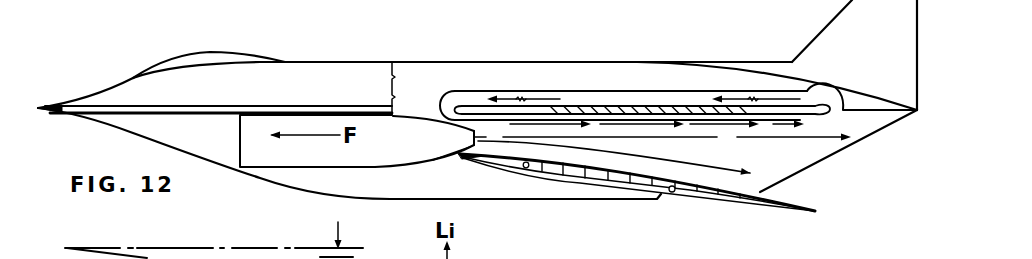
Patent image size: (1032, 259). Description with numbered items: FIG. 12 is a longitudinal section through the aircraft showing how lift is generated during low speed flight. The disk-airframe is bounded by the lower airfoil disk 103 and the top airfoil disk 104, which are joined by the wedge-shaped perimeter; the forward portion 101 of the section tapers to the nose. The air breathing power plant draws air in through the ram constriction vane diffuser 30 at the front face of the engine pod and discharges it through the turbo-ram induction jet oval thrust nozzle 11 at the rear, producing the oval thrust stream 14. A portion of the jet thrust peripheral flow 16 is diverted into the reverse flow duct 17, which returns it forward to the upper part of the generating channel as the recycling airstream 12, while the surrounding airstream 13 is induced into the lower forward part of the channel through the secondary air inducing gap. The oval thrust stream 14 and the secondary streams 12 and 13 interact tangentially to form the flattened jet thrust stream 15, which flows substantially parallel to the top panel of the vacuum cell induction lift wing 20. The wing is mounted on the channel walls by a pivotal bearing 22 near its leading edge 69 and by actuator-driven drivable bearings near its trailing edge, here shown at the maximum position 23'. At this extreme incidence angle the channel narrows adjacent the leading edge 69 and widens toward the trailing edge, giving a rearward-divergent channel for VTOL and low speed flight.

The nose 101 is at (44, 100).
The lower airfoil disk 103 is at (257, 177).
The top airfoil disk 104 is at (368, 61).
The ram constriction vane diffuser 30 is at (240, 137).
The oval thrust nozzle 11 is at (466, 138).
The recycling airstream 12 is at (478, 128).
The surrounding airstream 13 is at (454, 153).
The oval thrust stream 14 is at (595, 136).
The flattened jet thrust stream 15 is at (664, 148).
The reverse flow duct 17 is at (593, 100).
The jet thrust peripheral flow 16 is at (836, 117).
The vacuum cell induction lift wing 20 is at (764, 193).
The pivotal bearing 22 is at (527, 170).
The maximum position of drivable bearing 23' is at (691, 222).
The leading edge 69 is at (462, 158).